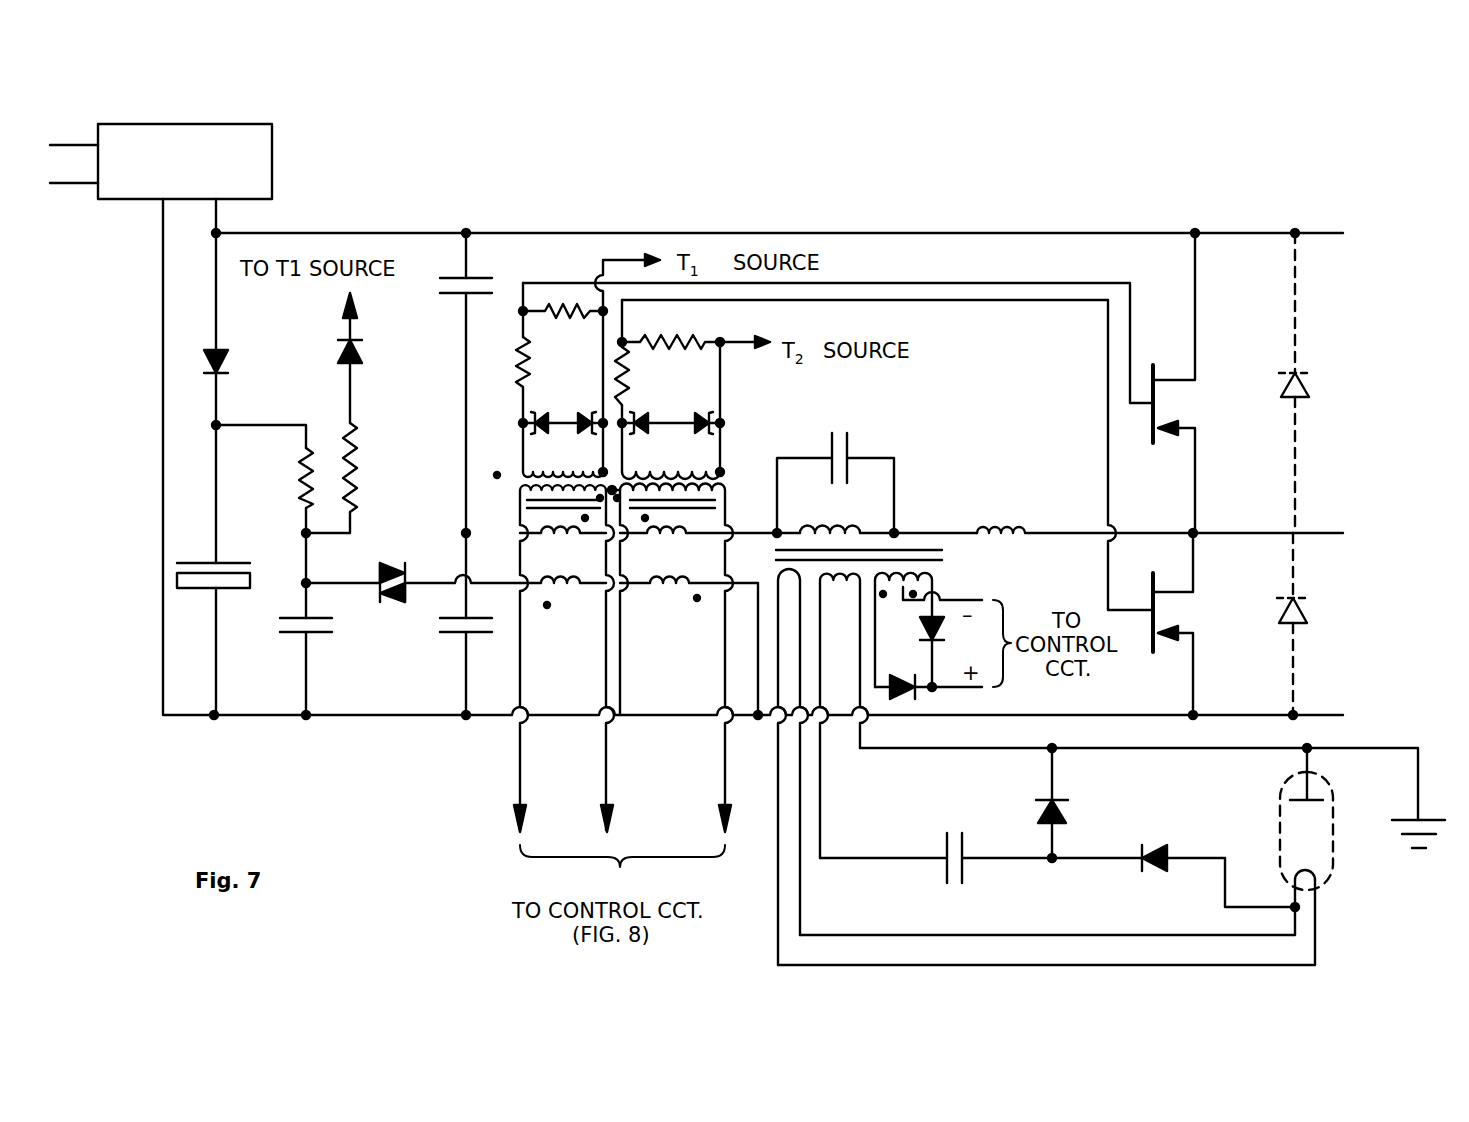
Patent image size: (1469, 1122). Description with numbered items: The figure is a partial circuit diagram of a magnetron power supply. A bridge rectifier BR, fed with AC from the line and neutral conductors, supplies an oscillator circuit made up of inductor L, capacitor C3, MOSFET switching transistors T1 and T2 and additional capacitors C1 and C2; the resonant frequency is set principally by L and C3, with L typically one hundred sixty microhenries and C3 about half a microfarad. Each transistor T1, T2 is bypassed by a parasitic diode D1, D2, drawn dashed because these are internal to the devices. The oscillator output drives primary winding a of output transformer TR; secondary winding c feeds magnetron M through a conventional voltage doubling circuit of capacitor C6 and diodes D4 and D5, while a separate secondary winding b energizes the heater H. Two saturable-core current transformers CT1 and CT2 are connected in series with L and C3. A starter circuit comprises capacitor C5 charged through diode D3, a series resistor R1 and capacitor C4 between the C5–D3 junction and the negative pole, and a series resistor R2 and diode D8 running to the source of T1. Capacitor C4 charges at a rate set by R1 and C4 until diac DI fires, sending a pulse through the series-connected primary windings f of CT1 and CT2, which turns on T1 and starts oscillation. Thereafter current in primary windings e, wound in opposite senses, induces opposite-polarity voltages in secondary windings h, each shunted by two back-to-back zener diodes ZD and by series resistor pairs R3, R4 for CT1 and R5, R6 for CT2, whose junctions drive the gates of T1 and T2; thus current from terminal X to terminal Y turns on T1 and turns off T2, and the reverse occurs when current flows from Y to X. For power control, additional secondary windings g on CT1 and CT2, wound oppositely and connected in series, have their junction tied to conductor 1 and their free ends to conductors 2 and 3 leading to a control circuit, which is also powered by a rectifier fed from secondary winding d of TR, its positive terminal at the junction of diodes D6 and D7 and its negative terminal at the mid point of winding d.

The bridge rectifier BR is at (272, 168).
The diode D3 is at (233, 312).
The diode D8 is at (334, 358).
The resistor R1 is at (287, 490).
The resistor R2 is at (371, 467).
The capacitor C5 is at (216, 639).
The capacitor C4 is at (315, 642).
The capacitor C1 is at (477, 272).
The capacitor C2 is at (457, 642).
The diac DI is at (413, 566).
The terminal Y is at (451, 524).
The resistor R3 is at (508, 362).
The resistor R4 is at (563, 323).
The resistor R5 is at (640, 376).
The resistor R6 is at (671, 329).
The zener diodes ZD is at (621, 409).
The secondary winding h is at (623, 462).
The current transformer CT1 is at (554, 651).
The current transformer CT2 is at (695, 656).
The primary winding e is at (563, 541).
The primary winding f is at (563, 597).
The secondary winding g is at (614, 496).
The conductor 1 is at (607, 760).
The conductor 2 is at (520, 754).
The conductor 3 is at (725, 758).
The output transformer TR is at (877, 727).
The primary winding a is at (877, 511).
The secondary winding b is at (793, 767).
The secondary winding c is at (844, 716).
The secondary winding d is at (928, 627).
The capacitor C3 is at (835, 477).
The diode D6 is at (912, 644).
The diode D7 is at (928, 672).
The inductor L is at (1160, 511).
The terminal X is at (1208, 520).
The MOSFET switching transistor T1 is at (1192, 383).
The MOSFET switching transistor T2 is at (1191, 624).
The parasitic diode D1 is at (1306, 384).
The parasitic diode D2 is at (1300, 615).
The diode D4 is at (1072, 803).
The capacitor C6 is at (936, 851).
The diode D5 is at (1173, 876).
The magnetron M is at (1280, 826).
The heater H is at (1320, 906).